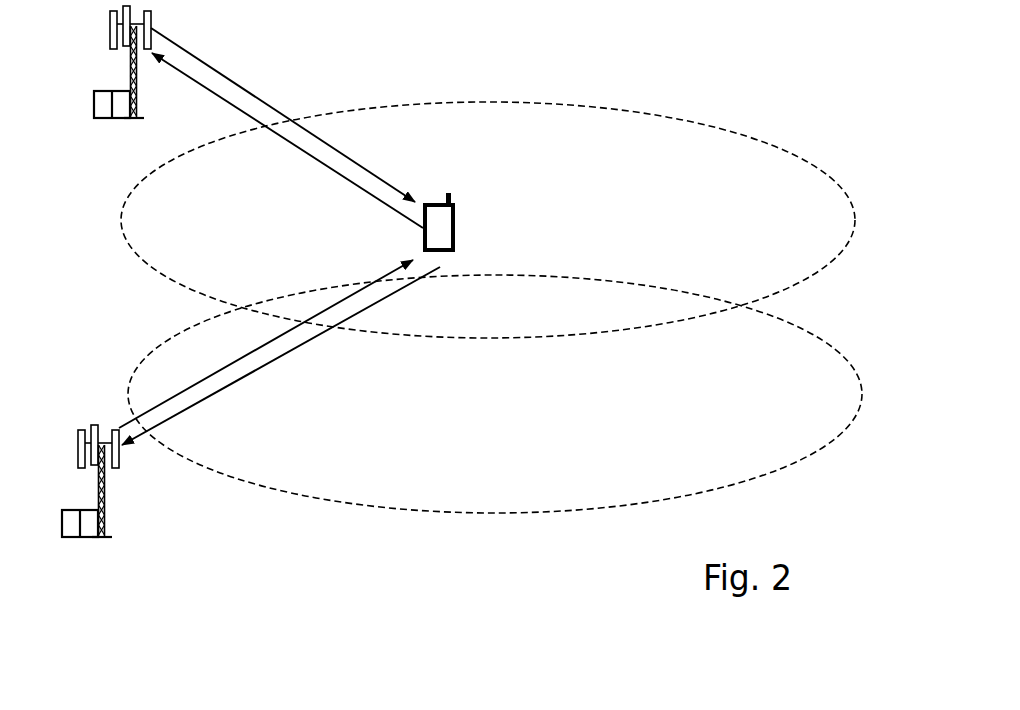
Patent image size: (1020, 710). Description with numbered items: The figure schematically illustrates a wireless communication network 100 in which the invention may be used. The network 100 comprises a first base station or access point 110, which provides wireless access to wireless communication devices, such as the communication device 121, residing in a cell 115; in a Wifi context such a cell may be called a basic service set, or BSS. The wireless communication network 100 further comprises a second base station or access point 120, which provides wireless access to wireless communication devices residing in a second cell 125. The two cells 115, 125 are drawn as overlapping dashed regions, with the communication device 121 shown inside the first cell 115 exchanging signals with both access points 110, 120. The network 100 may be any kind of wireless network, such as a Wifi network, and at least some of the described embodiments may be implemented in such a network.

The wireless communication network 100 is at (756, 141).
The first base station or access point 110 is at (120, 121).
The cell 115 is at (147, 267).
The second base station or access point 120 is at (92, 540).
The communication device 121 is at (457, 228).
The cell 125 is at (348, 502).